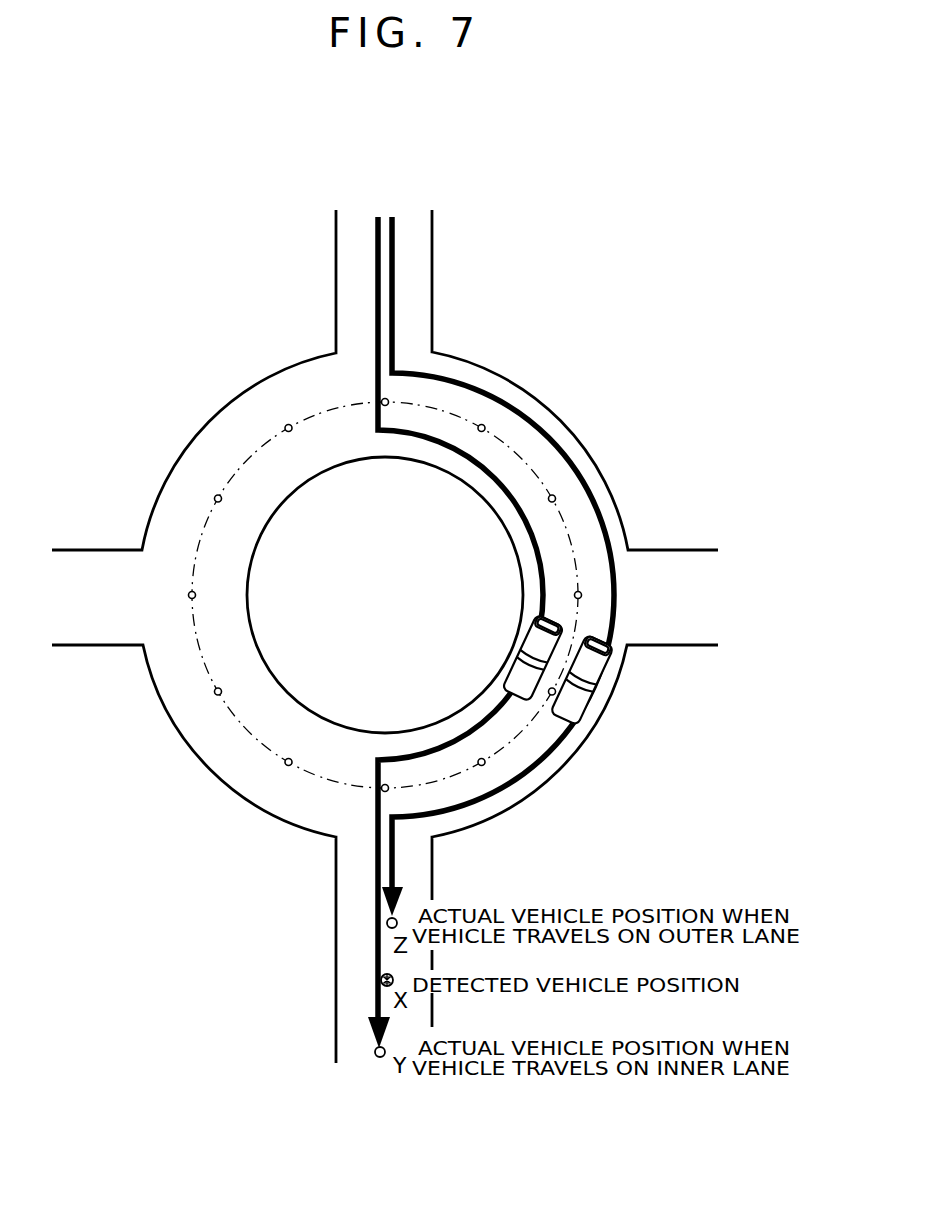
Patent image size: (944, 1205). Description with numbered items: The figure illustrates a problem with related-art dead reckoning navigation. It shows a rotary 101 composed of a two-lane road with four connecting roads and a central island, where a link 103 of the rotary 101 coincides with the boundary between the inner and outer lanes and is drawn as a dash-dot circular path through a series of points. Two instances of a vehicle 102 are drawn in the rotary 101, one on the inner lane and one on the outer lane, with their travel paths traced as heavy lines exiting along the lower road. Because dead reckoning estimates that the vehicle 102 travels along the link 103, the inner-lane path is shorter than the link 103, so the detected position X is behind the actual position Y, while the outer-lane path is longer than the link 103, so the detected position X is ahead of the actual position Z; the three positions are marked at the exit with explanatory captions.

The rotary 101 is at (560, 388).
The vehicle 102 is at (592, 675).
The link 103 is at (532, 468).